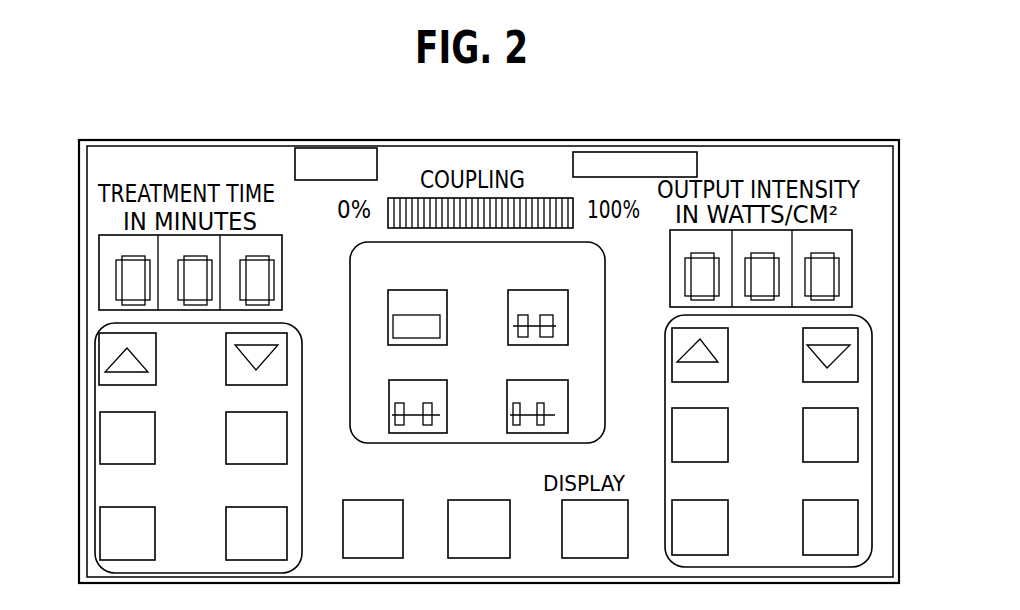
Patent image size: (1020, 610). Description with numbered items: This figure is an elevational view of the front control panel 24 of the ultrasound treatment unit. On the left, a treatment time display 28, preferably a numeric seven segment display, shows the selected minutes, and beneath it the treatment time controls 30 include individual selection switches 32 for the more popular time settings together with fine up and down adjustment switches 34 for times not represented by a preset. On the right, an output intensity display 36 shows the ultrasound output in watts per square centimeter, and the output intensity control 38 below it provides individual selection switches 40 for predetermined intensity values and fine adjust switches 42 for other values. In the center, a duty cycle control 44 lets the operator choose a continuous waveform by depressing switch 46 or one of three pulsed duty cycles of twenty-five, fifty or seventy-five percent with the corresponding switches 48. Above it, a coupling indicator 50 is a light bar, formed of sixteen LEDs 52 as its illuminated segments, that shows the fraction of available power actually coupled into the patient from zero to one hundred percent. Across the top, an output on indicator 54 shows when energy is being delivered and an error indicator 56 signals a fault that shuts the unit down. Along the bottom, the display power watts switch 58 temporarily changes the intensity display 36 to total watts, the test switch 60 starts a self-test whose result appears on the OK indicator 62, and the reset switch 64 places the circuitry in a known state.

The control panel 24 is at (492, 146).
The treatment time display 28 is at (99, 253).
The treatment time controls 30 is at (95, 418).
The individual selection switches 32 is at (226, 440).
The fine up and down adjustment switches 34 is at (226, 383).
The output intensity display 36 is at (853, 257).
The output intensity control 38 is at (872, 440).
The individual selection switches 40 is at (803, 450).
The fine adjust switches 42 is at (803, 368).
The duty cycle control 44 is at (604, 295).
The continuous duty cycle switch 46 is at (448, 323).
The pulsed duty cycle switches 48 is at (508, 336).
The coupling indicator 50 is at (542, 198).
The LEDs 52 is at (412, 198).
The output on indicator 54 is at (660, 152).
The error indicator 56 is at (342, 150).
The display power watts switch 58 is at (630, 524).
The test switch 60 is at (510, 536).
The OK indicator 62 is at (490, 483).
The reset switch 64 is at (361, 500).